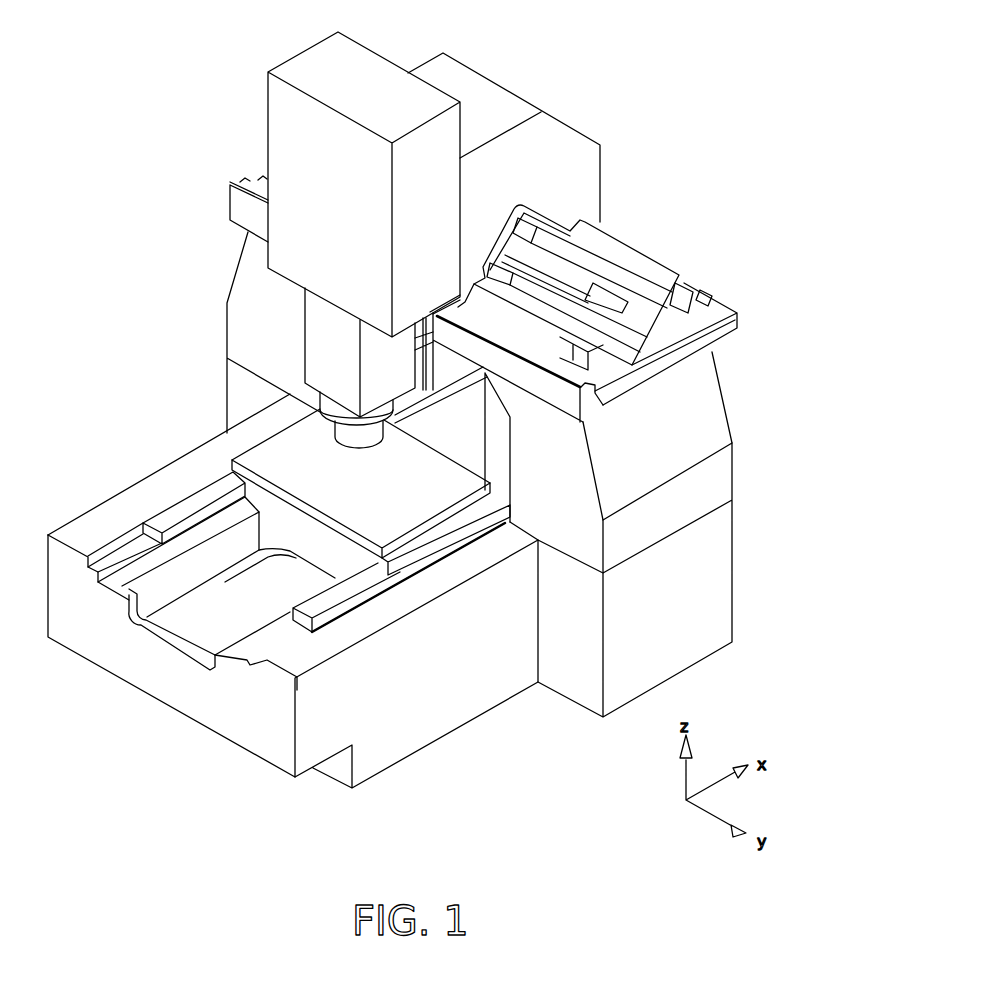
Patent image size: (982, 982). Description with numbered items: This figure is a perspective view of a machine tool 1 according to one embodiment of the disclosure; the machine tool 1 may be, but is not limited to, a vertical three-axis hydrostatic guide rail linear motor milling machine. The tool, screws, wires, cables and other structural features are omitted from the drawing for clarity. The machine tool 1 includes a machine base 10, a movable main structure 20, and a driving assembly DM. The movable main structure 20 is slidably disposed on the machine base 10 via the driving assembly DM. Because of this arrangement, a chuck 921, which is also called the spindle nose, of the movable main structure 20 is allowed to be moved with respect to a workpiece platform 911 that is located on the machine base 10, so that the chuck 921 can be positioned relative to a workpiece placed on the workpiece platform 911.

The machine tool 1 is at (152, 48).
The machine base 10 is at (746, 473).
The movable main structure 20 is at (548, 98).
The chuck 921 is at (330, 437).
The workpiece platform 911 is at (317, 472).
The driving assembly DM is at (658, 249).